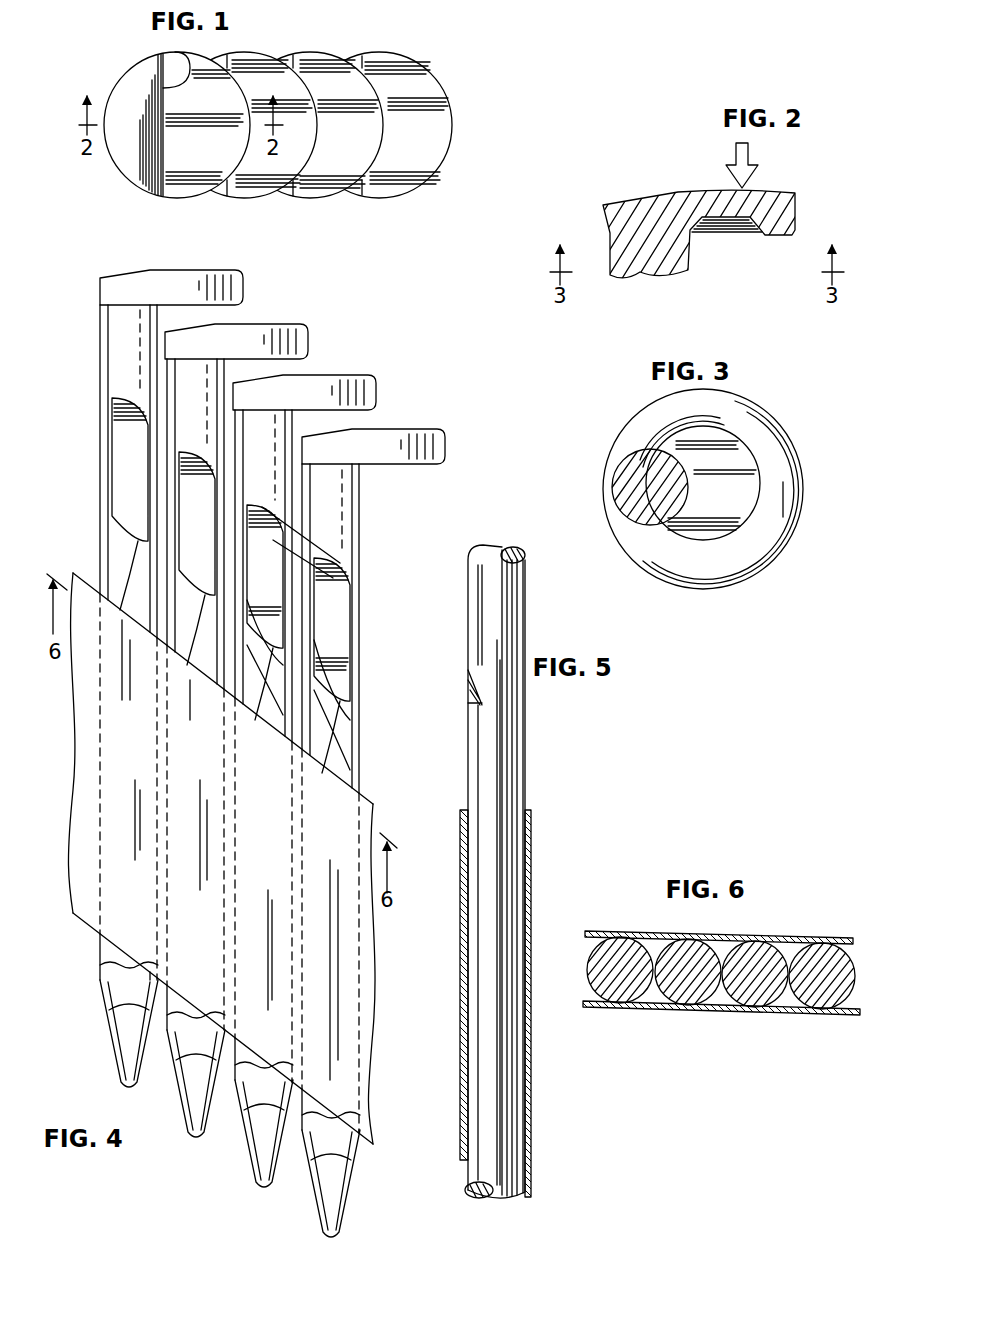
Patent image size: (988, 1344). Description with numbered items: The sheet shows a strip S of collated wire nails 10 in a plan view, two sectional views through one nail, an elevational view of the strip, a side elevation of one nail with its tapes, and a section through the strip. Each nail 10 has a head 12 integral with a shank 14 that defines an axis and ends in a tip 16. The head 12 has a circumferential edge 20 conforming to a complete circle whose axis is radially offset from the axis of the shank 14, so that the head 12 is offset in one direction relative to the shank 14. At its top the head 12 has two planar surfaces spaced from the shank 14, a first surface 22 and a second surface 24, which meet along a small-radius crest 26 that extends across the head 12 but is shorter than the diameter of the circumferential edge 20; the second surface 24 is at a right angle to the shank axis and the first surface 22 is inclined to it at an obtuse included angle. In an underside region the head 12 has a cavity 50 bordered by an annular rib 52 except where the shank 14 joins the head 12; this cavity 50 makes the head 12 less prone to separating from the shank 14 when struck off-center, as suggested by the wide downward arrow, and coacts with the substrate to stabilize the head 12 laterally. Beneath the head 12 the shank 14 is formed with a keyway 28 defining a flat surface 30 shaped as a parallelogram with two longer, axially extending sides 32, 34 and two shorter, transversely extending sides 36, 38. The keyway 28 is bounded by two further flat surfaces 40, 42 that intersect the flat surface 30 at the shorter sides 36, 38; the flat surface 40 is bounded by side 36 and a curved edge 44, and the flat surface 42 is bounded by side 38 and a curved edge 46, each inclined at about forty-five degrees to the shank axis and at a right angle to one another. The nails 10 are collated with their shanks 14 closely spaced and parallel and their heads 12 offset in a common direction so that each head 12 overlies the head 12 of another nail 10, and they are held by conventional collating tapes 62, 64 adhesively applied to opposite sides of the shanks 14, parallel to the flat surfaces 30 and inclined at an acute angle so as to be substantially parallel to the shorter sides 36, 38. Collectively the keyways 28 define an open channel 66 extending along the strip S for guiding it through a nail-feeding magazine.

In FIG. 1, the wire nail 10 is at (197, 47).
In FIG. 2, the wire nail 10 is at (596, 177).
In FIG. 3, the wire nail 10 is at (783, 560).
In FIG. 4, the wire nail 10 is at (232, 266).
In FIG. 1, the head 12 is at (198, 188).
In FIG. 2, the head 12 is at (712, 200).
In FIG. 4, the head 12 is at (180, 282).
In FIG. 2, the shank 14 is at (680, 268).
In FIG. 3, the shank 14 is at (673, 502).
In FIG. 4, the shank 14 is at (168, 322).
In FIG. 5, the shank 14 is at (527, 572).
In FIG. 6, the shank 14 is at (770, 940).
In FIG. 4, the tip 16 is at (257, 1168).
In FIG. 1, the circumferential edge 20 is at (122, 170).
In FIG. 2, the circumferential edge 20 is at (797, 206).
In FIG. 3, the circumferential edge 20 is at (753, 400).
In FIG. 4, the circumferential edge 20 is at (248, 288).
In FIG. 1, the first surface 22 is at (106, 131).
In FIG. 2, the first surface 22 is at (650, 194).
In FIG. 4, the first surface 22 is at (132, 275).
In FIG. 1, the second surface 24 is at (181, 163).
In FIG. 2, the second surface 24 is at (770, 193).
In FIG. 4, the second surface 24 is at (252, 280).
In FIG. 1, the crest 26 is at (180, 58).
In FIG. 2, the crest 26 is at (675, 194).
In FIG. 4, the crest 26 is at (180, 268).
In FIG. 4, the keyway 28 is at (332, 561).
In FIG. 5, the keyway 28 is at (468, 585).
In FIG. 4, the flat surface 30 is at (330, 620).
In FIG. 5, the flat surface 30 is at (468, 622).
In FIG. 4, the longer side 32 is at (318, 700).
In FIG. 4, the longer side 34 is at (326, 660).
In FIG. 4, the shorter side 36 is at (316, 590).
In FIG. 4, the shorter side 38 is at (330, 722).
In FIG. 4, the flat surface 40 is at (280, 505).
In FIG. 4, the flat surface 42 is at (330, 748).
In FIG. 4, the curved edge 44 is at (320, 515).
In FIG. 4, the curved edge 46 is at (348, 772).
In FIG. 2, the cavity 50 is at (727, 230).
In FIG. 3, the cavity 50 is at (708, 479).
In FIG. 2, the annular rib 52 is at (783, 240).
In FIG. 3, the annular rib 52 is at (762, 435).
In FIG. 4, the collating tape 62 is at (352, 943).
In FIG. 5, the collating tape 62 is at (462, 900).
In FIG. 6, the collating tape 62 is at (817, 937).
In FIG. 4, the collating tape 64 is at (230, 1040).
In FIG. 5, the collating tape 64 is at (532, 905).
In FIG. 6, the collating tape 64 is at (768, 1012).
In FIG. 4, the open channel 66 is at (362, 640).
In FIG. 1, the strip S is at (112, 60).
In FIG. 4, the strip S is at (370, 282).
In FIG. 6, the strip S is at (656, 1014).